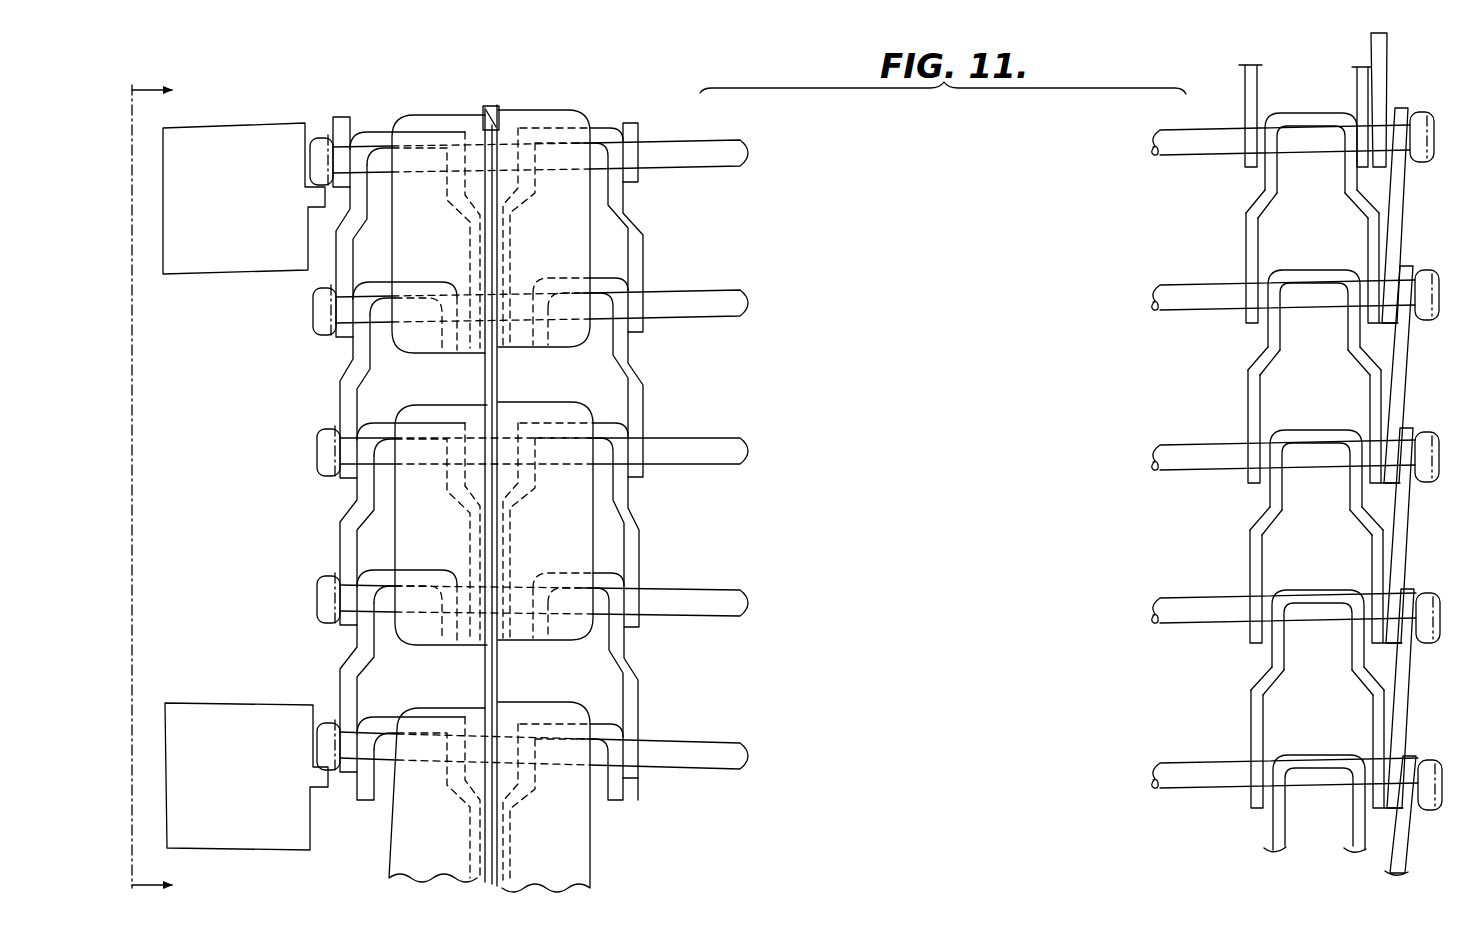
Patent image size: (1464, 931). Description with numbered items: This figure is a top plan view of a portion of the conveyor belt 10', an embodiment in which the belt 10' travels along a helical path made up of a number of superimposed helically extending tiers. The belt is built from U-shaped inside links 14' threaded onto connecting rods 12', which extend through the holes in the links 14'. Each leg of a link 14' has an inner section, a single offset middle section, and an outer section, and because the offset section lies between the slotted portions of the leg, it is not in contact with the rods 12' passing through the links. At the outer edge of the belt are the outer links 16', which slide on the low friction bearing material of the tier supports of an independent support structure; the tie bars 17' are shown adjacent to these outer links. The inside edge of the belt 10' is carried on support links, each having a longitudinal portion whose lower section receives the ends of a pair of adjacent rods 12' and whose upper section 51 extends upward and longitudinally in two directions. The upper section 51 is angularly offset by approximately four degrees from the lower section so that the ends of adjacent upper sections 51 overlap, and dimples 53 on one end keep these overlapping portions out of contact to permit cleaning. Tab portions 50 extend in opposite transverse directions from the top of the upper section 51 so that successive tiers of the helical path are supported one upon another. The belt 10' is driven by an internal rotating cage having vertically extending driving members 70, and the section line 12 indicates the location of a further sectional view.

The conveyor belt 10' is at (548, 465).
The section line for FIG. 12 is at (173, 490).
The connecting rods 12' is at (566, 443).
The inside links 14' is at (506, 498).
The outer links 16' is at (1297, 458).
The tie bars 17' is at (1413, 454).
The tab portions 50 is at (446, 250).
The upper section 51 is at (490, 385).
The dimples 53 is at (489, 118).
The driving members 70 is at (248, 217).